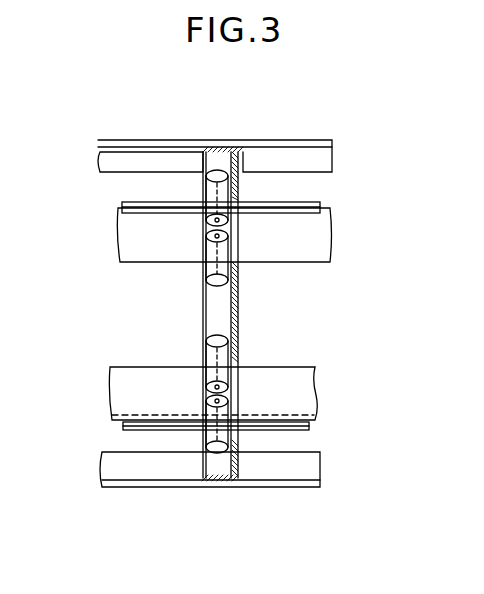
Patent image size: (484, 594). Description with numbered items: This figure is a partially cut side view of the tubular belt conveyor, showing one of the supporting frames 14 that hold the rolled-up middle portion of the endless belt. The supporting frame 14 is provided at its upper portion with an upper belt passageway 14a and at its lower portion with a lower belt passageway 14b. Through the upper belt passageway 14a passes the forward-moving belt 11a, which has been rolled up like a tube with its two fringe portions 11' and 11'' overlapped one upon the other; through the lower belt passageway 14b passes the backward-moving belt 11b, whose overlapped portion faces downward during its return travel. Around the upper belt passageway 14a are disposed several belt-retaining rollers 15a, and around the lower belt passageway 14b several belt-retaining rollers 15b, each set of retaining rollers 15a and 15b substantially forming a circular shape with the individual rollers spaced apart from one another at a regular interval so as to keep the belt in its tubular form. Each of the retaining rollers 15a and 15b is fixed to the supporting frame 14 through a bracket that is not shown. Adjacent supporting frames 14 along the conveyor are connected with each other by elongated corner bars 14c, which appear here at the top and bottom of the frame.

The supporting frame 14 is at (246, 160).
The upper belt passageway 14a is at (237, 197).
The lower belt passageway 14b is at (238, 357).
The elongated corner bar 14c is at (172, 155).
The forward-moving belt 11a is at (292, 243).
The backward-moving belt 11b is at (133, 367).
The fringe portion 11' is at (208, 306).
The fringe portion 11'' is at (209, 281).
The belt-retaining roller 15a is at (203, 260).
The belt-retaining roller 15b is at (205, 217).